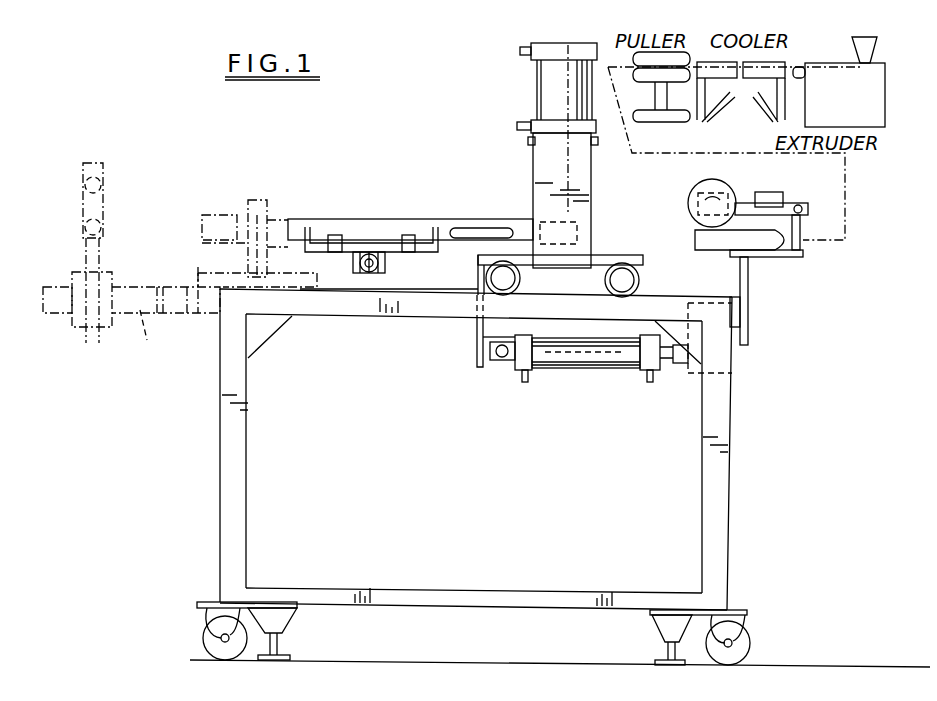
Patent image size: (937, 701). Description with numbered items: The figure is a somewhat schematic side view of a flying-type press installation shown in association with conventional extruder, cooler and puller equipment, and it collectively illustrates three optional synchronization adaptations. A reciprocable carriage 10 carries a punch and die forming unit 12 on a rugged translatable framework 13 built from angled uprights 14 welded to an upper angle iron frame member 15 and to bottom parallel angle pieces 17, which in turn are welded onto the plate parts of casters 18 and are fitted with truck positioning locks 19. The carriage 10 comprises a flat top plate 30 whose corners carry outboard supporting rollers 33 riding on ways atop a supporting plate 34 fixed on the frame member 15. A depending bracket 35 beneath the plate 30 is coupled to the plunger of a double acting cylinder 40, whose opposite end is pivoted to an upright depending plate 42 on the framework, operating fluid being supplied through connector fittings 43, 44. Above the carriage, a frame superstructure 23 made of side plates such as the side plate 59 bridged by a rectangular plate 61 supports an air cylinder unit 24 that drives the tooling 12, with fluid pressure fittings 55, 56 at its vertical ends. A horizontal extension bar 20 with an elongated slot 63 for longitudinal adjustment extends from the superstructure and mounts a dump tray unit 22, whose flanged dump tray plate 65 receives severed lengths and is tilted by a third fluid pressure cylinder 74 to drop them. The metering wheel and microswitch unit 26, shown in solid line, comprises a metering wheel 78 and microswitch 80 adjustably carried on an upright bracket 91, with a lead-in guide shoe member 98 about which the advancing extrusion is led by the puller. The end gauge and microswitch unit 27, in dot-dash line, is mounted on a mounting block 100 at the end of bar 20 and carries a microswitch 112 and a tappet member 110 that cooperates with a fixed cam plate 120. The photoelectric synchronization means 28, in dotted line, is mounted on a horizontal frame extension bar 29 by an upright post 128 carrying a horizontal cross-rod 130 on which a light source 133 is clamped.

The reciprocable carriage 10 is at (596, 249).
The forming unit 12 is at (599, 188).
The translatable framework 13 is at (736, 479).
The angled uprights 14 is at (245, 500).
The upper angle iron frame member 15 is at (461, 301).
The parallel angle pieces 17 is at (553, 600).
The casters 18 is at (205, 637).
The truck positioning locks 19 is at (282, 623).
The horizontal extension bar 20 is at (353, 230).
The dump tray unit 22 is at (389, 240).
The frame superstructure 23 is at (564, 177).
The air cylinder unit 24 is at (555, 101).
The metering wheel and microswitch unit 26 is at (735, 195).
The end gauge and microswitch unit 27 is at (279, 194).
The photoelectric synchronization means 28 is at (68, 322).
The horizontal frame extension bar 29 is at (185, 313).
The top plate 30 is at (642, 263).
The supporting rollers 33 is at (520, 286).
The supporting plate 34 is at (411, 292).
The depending bracket 35 is at (477, 352).
The double acting cylinder 40 is at (619, 353).
The upright depending plate 42 is at (693, 375).
The connector fitting 43 is at (650, 382).
The connector fitting 44 is at (527, 383).
The fluid pressure fitting 55 is at (521, 52).
The fluid pressure fitting 56 is at (518, 127).
The side plate 59 is at (578, 213).
The rectangular plate 61 is at (529, 146).
The elongated slot 63 is at (503, 233).
The dump tray plate 65 is at (318, 242).
The third fluid pressure cylinder 74 is at (366, 277).
The metering wheel 78 is at (708, 183).
The microswitch 80 is at (772, 197).
The upright bracket 91 is at (748, 344).
The lead-in guide shoe member 98 is at (751, 265).
The mounting block 100 is at (290, 204).
The tappet member 110 is at (256, 252).
The microswitch 112 is at (224, 210).
The cam plate 120 is at (198, 272).
The upright post 128 is at (83, 252).
The horizontal cross-rod 130 is at (83, 187).
The light source 133 is at (103, 227).